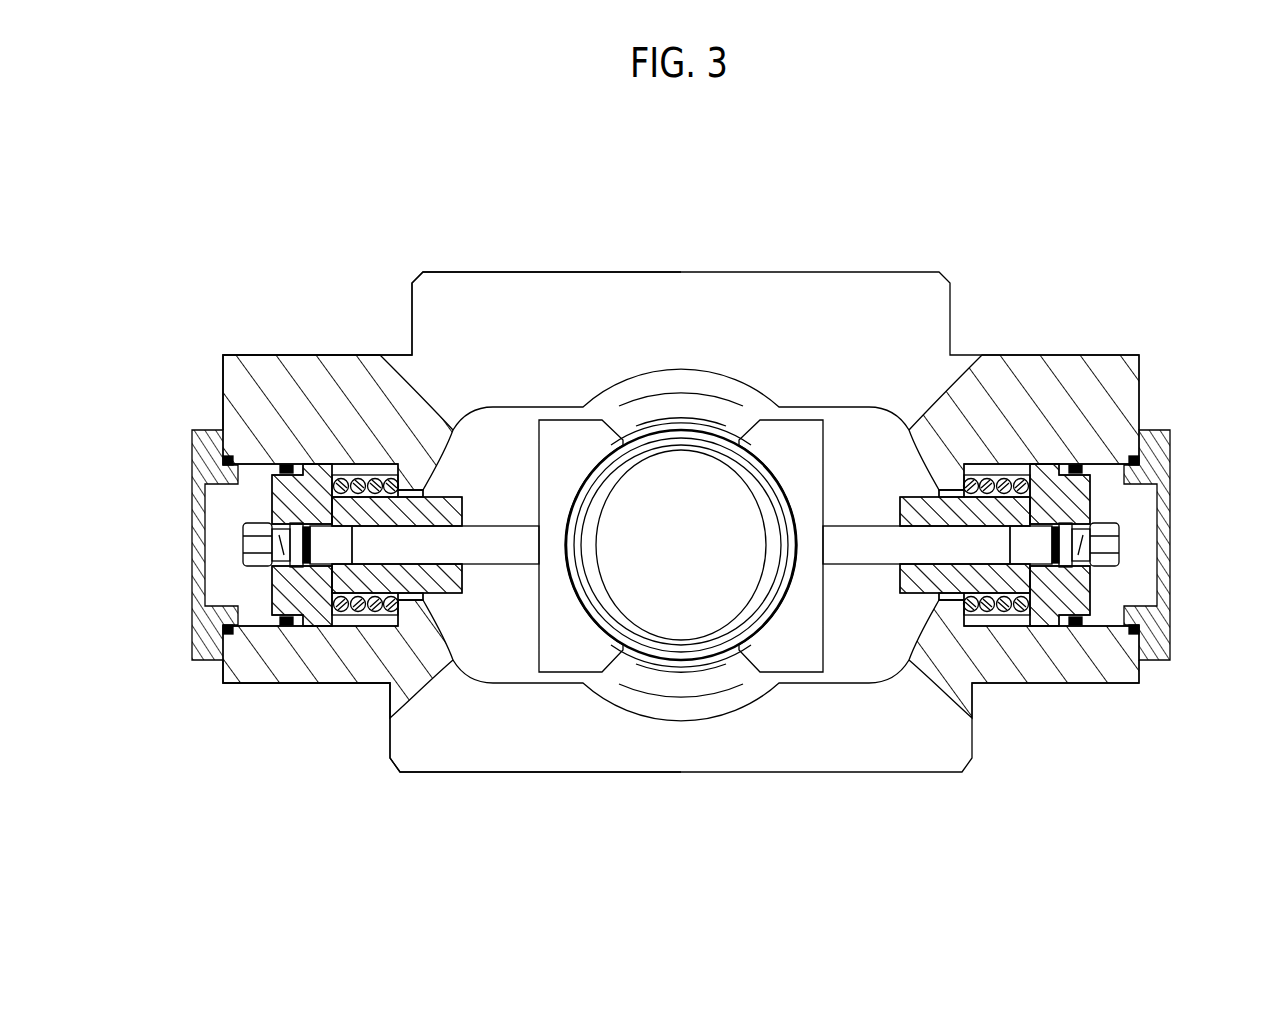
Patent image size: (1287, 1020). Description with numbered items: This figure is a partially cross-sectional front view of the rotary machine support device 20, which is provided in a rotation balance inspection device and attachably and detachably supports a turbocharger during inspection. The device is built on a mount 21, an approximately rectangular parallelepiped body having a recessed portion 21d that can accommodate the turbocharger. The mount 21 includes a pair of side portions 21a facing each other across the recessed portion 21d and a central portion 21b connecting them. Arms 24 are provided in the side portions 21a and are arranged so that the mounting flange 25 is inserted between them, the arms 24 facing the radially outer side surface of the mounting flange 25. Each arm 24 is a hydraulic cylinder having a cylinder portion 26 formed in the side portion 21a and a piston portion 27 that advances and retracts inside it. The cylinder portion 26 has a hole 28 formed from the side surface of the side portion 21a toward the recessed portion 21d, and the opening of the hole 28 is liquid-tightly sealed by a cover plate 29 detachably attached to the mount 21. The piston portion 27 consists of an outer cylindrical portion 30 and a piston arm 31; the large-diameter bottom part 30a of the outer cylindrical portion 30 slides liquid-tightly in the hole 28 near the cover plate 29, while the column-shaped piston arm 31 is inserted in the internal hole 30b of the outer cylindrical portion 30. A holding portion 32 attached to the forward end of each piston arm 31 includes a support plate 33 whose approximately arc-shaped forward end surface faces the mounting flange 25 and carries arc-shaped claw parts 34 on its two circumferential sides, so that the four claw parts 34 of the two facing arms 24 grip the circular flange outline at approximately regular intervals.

The rotary machine support device 20 is at (1045, 212).
The mount 21 is at (497, 260).
The side portions 21a is at (355, 360).
The central portion 21b is at (871, 296).
The recessed portion 21d is at (515, 647).
The arms 24 is at (444, 472).
The mounting flange 25 is at (662, 440).
The cylinder portion 26 is at (257, 440).
The piston portion 27 is at (363, 637).
The hole 28 is at (338, 462).
The cover plate 29 is at (195, 513).
The outer cylindrical portion 30 is at (353, 585).
The bottom part 30a is at (1055, 490).
The internal hole 30b is at (405, 536).
The piston arm 31 is at (488, 555).
The holding portion 32 is at (573, 408).
The support plate 33 is at (570, 663).
The claw parts 34 is at (619, 462).